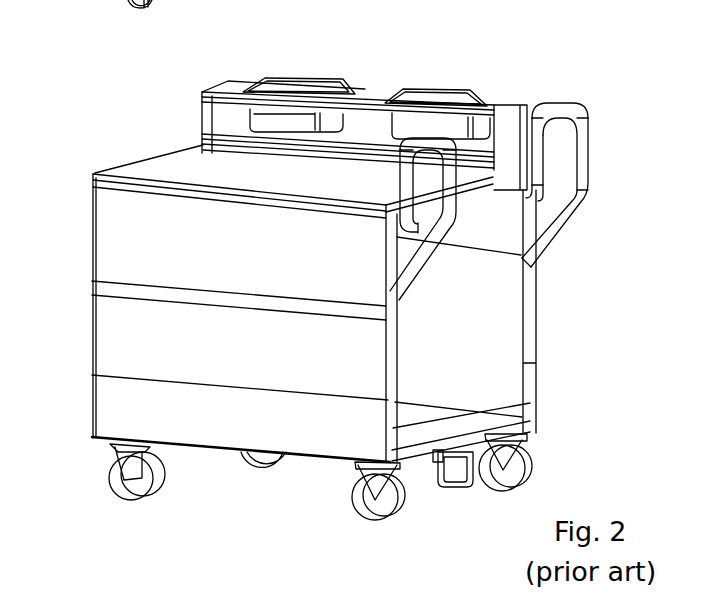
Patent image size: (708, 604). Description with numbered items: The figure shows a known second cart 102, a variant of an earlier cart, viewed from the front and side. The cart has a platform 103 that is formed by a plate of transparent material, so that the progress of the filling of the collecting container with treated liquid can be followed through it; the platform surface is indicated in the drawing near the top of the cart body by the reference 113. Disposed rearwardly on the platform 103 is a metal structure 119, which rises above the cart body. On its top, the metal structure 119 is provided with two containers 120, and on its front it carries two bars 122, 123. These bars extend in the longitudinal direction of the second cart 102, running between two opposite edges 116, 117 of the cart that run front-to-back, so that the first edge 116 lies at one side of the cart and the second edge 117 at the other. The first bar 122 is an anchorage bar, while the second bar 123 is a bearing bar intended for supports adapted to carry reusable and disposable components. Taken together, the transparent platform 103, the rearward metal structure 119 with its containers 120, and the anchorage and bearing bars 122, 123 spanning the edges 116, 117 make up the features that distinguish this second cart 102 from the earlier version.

The second cart 102 is at (107, 156).
The platform 103 is at (112, 173).
The top surface 113 is at (163, 167).
The opposite edge 116 is at (138, 168).
The opposite edge 117 is at (527, 176).
The metal structure 119 is at (511, 103).
The containers 120 is at (301, 87).
The first bar 122 is at (207, 97).
The second bar 123 is at (203, 128).